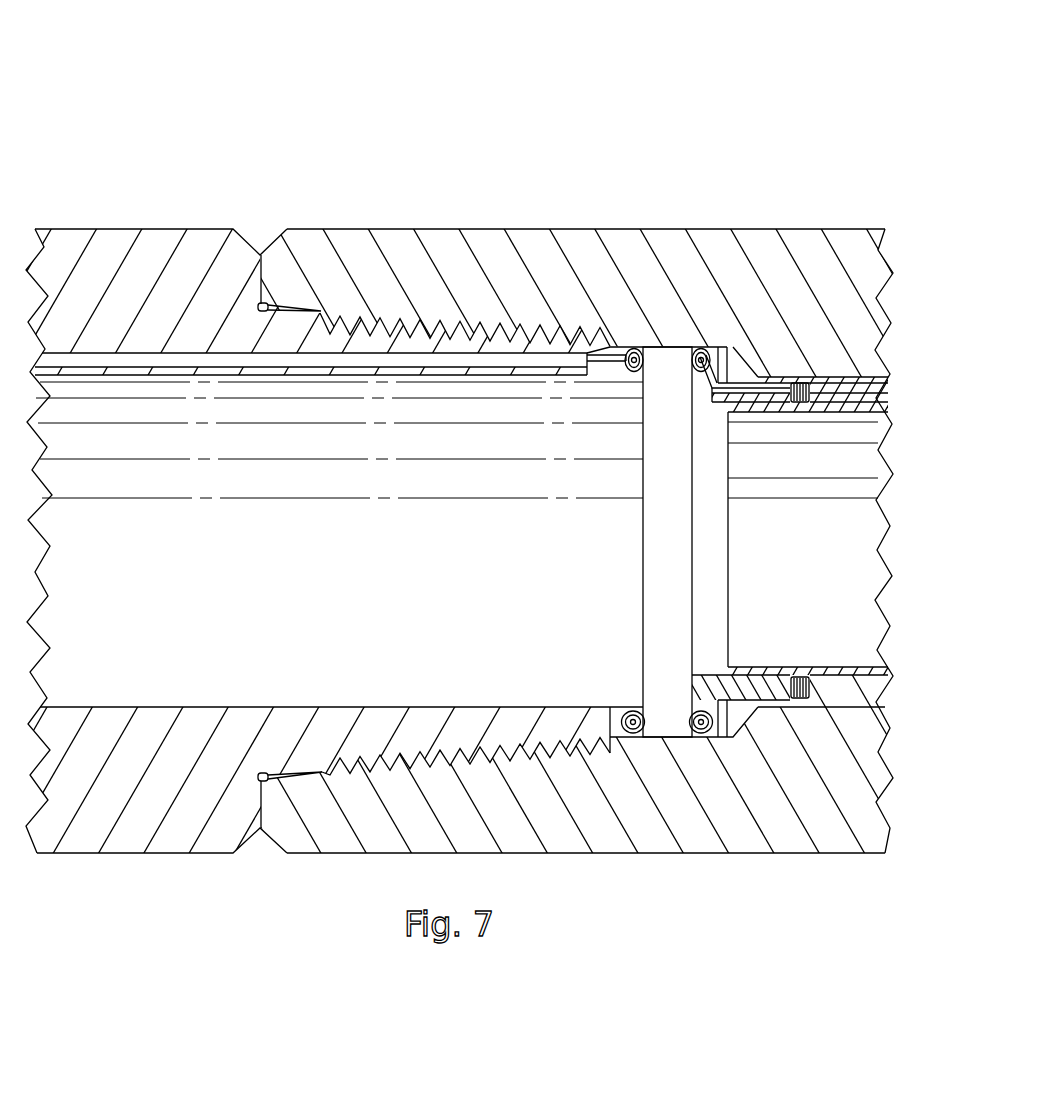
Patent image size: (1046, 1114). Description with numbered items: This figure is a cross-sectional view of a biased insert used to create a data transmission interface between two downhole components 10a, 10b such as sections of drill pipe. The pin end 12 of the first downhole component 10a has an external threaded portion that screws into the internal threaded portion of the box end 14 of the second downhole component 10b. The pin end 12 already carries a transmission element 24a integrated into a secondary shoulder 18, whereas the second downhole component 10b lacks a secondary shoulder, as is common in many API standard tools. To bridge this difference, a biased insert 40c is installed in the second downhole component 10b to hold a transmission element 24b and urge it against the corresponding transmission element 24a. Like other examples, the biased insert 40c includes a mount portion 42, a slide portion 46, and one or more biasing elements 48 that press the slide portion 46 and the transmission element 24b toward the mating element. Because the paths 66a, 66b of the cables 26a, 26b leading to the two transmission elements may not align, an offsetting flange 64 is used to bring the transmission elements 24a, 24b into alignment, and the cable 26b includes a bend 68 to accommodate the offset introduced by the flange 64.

The first downhole component 10a is at (334, 428).
The second downhole component 10b is at (575, 428).
The pin end 12 is at (122, 216).
The box end 14 is at (575, 503).
The secondary shoulder 18 is at (661, 370).
The transmission element 24a is at (638, 347).
The transmission element 24b is at (699, 347).
The cable 26a is at (602, 322).
The cable 26b is at (758, 393).
The biased insert 40c is at (852, 718).
The mount portion 42 is at (823, 408).
The slide portion 46 is at (760, 410).
The biasing element 48 is at (800, 404).
The offsetting flange 64 is at (718, 350).
The path 66a is at (273, 363).
The path 66b is at (860, 392).
The bend 68 is at (710, 392).